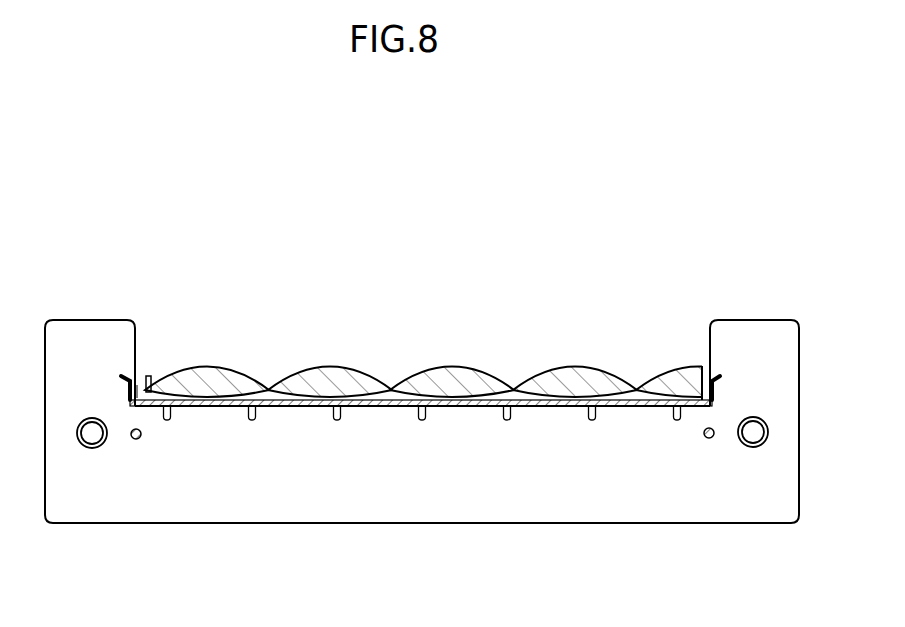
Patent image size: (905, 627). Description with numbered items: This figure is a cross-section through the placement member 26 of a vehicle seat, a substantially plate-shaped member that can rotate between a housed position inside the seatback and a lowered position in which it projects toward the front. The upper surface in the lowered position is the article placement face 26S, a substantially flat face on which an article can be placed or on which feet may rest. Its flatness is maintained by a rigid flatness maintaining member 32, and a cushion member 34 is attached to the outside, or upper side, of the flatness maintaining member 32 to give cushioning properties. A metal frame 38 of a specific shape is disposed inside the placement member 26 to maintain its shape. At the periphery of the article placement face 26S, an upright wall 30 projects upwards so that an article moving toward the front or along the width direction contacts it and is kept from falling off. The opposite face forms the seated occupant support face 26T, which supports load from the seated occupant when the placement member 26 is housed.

The placement member 26 is at (73, 527).
The article placement face 26S is at (143, 397).
The seated occupant support face 26T is at (388, 524).
The upright wall 30 is at (90, 319).
The flatness maintaining member 32 is at (478, 408).
The cushion member 34 is at (461, 364).
The metal frame 38 is at (91, 449).